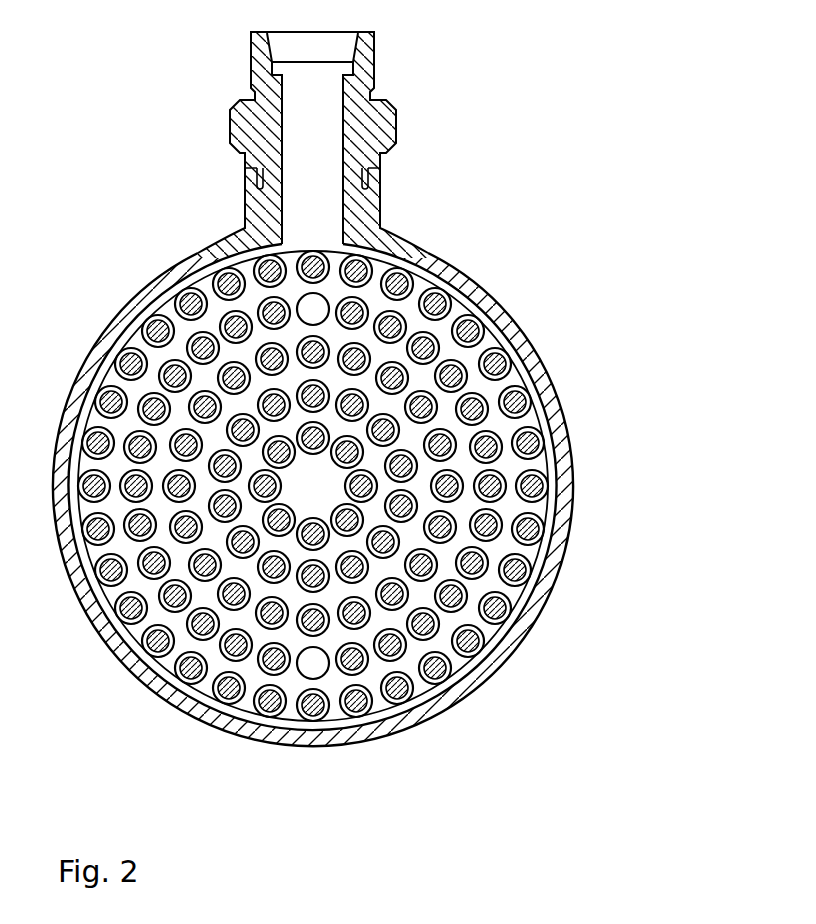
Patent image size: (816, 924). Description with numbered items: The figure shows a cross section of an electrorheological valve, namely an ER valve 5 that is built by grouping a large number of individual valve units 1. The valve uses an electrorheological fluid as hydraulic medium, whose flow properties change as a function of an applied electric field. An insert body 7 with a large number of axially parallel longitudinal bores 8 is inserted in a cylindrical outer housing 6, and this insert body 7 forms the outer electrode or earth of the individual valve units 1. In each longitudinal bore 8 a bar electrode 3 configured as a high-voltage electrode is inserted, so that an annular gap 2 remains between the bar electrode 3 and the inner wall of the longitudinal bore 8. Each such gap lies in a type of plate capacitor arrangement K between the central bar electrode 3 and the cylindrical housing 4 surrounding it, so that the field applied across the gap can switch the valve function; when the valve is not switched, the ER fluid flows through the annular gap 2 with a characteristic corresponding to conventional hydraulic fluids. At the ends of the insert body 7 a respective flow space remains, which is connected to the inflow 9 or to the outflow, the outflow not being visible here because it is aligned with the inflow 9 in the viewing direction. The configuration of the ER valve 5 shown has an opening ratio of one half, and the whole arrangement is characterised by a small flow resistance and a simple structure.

The valve unit 1 is at (383, 672).
The annular gap 2 is at (512, 366).
The bar electrode 3 is at (510, 352).
The cylindrical housing 4 is at (520, 462).
The ER valve 5 is at (514, 269).
The cylindrical outer housing 6 is at (552, 405).
The insert body 7 is at (290, 734).
The longitudinal bore 8 is at (490, 312).
The inflow 9 is at (409, 96).
The plate capacitor arrangement K is at (485, 584).